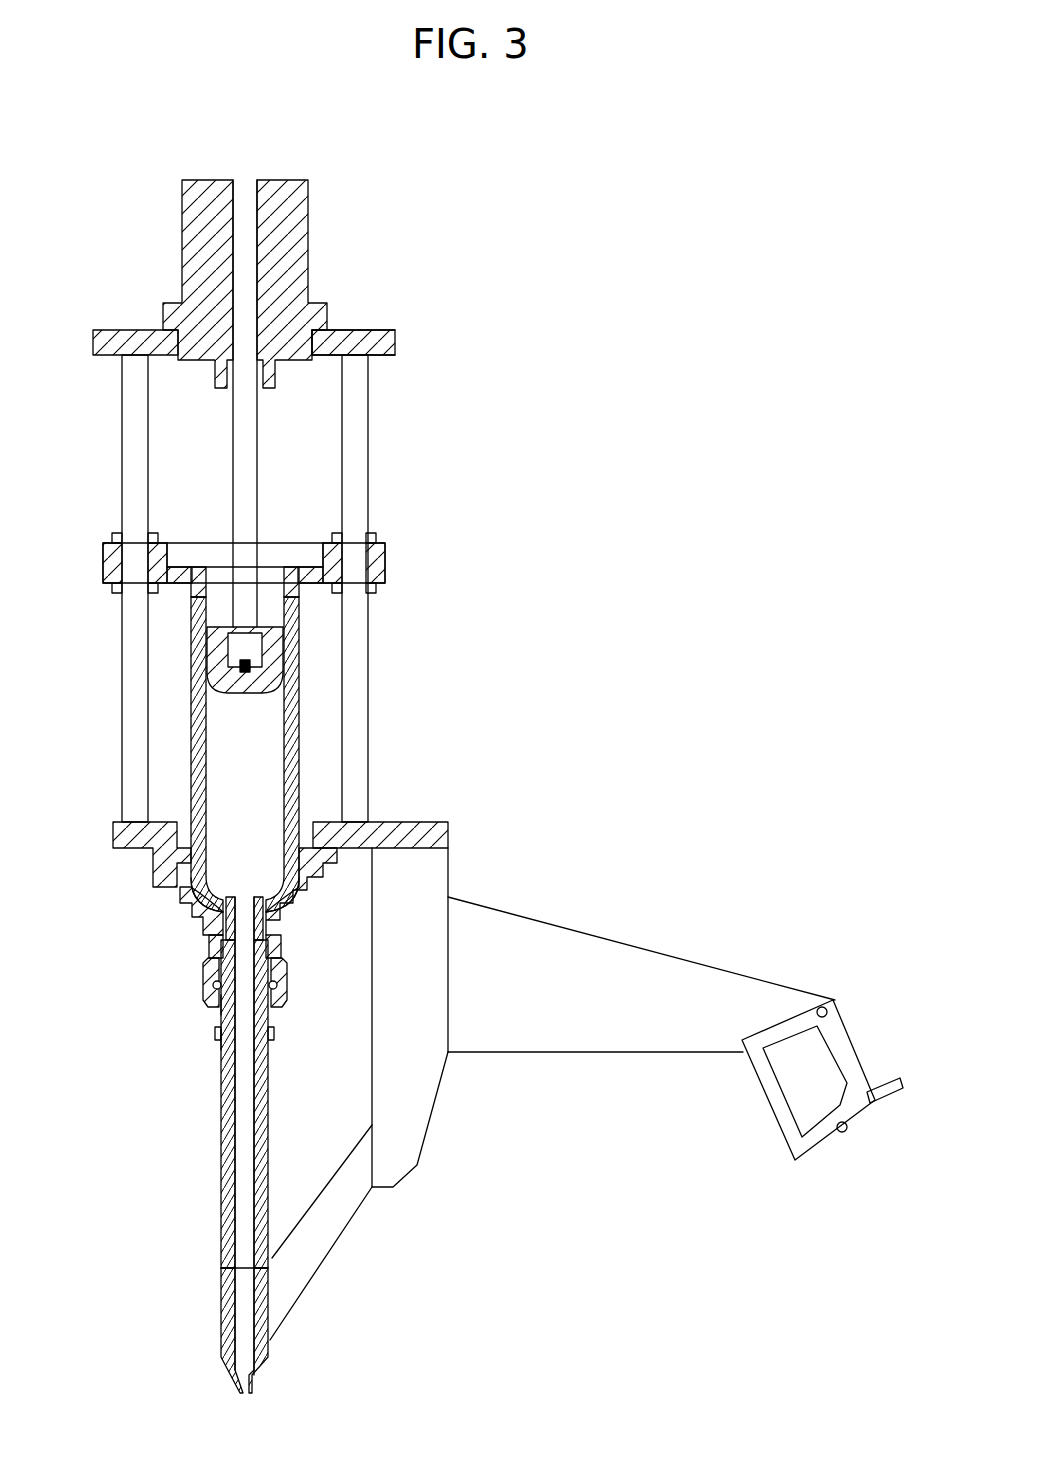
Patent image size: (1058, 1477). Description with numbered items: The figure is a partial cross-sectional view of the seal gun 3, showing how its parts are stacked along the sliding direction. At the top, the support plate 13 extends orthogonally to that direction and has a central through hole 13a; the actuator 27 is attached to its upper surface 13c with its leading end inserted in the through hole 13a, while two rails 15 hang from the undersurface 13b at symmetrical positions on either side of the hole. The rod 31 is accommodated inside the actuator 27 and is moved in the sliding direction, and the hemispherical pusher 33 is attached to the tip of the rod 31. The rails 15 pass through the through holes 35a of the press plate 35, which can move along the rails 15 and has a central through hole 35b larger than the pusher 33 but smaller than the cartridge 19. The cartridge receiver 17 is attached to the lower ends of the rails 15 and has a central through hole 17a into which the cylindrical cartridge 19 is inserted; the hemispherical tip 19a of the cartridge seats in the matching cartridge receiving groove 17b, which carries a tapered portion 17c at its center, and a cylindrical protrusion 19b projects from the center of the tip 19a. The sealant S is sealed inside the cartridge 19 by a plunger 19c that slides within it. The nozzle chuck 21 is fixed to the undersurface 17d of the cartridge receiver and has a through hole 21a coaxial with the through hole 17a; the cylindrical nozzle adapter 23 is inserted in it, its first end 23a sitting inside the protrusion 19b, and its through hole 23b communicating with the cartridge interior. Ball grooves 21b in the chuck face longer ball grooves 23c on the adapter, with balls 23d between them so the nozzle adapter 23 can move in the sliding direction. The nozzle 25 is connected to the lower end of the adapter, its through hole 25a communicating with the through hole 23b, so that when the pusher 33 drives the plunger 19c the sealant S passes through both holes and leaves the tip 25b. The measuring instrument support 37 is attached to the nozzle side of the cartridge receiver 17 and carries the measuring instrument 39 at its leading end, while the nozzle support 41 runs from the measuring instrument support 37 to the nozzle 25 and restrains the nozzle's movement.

The seal gun 3 is at (83, 122).
The support plate 13 is at (100, 330).
The through hole 13a is at (312, 333).
The undersurface 13b is at (395, 356).
The upper surface 13c is at (395, 332).
The rails 15 is at (122, 503).
The cartridge receiver 17 is at (113, 822).
The through hole 17a is at (178, 800).
The cartridge receiving groove 17b is at (340, 872).
The tapered portion 17c is at (215, 940).
The undersurface 17d is at (284, 955).
The cartridge 19 is at (300, 705).
The tip 19a is at (203, 905).
The protrusion 19b is at (268, 912).
The plunger 19c is at (207, 697).
The nozzle chuck 21 is at (203, 983).
The through hole 21a is at (268, 1010).
The ball grooves 21b is at (214, 990).
The nozzle adapter 23 is at (221, 1185).
The first end 23a is at (263, 898).
The through hole 23b is at (250, 1088).
The ball grooves 23c is at (221, 1035).
The balls 23d is at (221, 1005).
The nozzle 25 is at (221, 1330).
The through hole 25a is at (240, 1270).
The tip 25b is at (292, 1368).
The actuator 27 is at (182, 222).
The rod 31 is at (233, 430).
The pusher 33 is at (192, 620).
The press plate 35 is at (103, 563).
The through holes 35a is at (153, 540).
The through hole 35b is at (295, 590).
The measuring instrument support 37 is at (555, 915).
The measuring instrument 39 is at (848, 1038).
The nozzle support 41 is at (348, 1218).
The sealant S is at (250, 808).